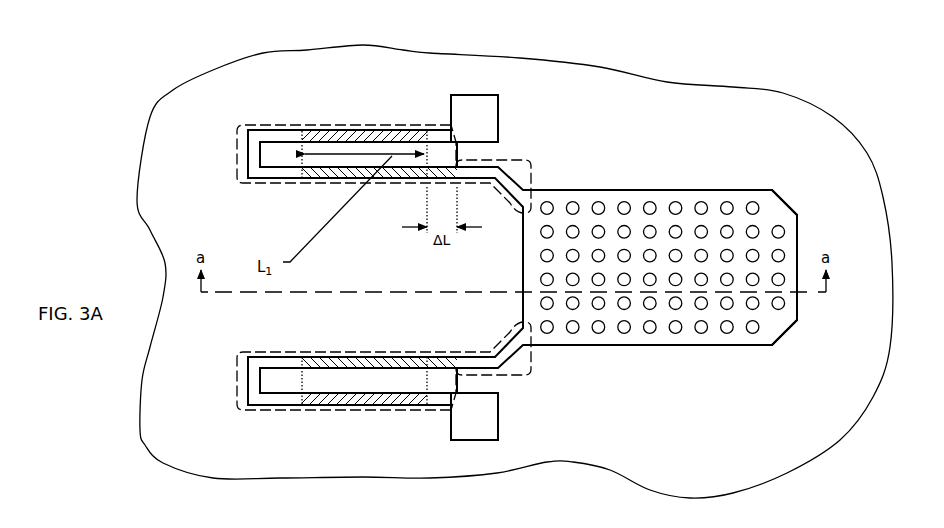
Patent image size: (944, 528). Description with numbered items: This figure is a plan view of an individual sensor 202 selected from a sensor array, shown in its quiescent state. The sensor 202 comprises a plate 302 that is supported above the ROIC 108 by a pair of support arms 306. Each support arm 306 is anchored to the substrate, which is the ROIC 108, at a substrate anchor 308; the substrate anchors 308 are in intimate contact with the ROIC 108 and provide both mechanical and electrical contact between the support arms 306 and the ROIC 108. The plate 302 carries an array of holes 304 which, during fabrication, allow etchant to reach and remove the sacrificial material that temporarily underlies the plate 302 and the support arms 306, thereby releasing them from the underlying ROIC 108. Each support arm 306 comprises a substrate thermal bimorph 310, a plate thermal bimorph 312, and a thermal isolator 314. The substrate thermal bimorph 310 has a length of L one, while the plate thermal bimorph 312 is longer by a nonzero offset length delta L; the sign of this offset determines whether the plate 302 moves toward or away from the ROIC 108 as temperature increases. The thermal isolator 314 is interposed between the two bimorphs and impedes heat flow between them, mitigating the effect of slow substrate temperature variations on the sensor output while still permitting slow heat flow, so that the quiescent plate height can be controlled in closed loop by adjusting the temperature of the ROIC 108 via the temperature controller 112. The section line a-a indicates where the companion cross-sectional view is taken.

The sensor 202 is at (337, 77).
The ROIC 108 is at (753, 448).
The temperature controller 112 is at (515, 271).
The plate 302 is at (770, 188).
The holes 304 is at (755, 329).
The support arms 306 is at (345, 180).
The substrate anchors 308 is at (475, 93).
The substrate thermal bimorph 310 is at (350, 137).
The plate thermal bimorph 312 is at (313, 180).
The thermal isolator 314 is at (255, 155).